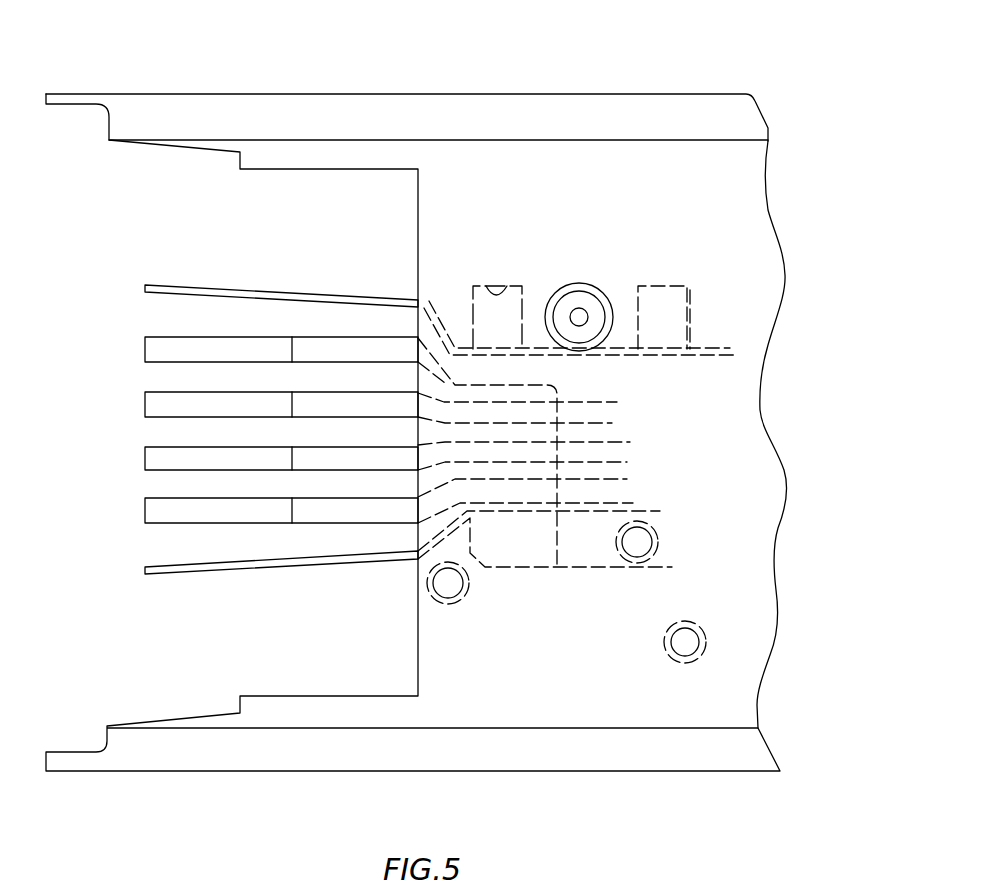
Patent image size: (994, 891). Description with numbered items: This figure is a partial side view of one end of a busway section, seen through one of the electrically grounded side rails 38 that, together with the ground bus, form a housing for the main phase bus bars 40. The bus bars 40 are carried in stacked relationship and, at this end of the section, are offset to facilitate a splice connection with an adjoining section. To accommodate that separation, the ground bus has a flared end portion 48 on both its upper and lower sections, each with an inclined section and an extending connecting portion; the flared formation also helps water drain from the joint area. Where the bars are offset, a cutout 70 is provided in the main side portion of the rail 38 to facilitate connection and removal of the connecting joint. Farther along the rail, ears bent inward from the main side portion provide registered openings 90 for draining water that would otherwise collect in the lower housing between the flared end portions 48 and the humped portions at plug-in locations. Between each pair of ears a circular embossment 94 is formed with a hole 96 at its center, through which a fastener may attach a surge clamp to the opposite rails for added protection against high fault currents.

The ground side rails 38 is at (578, 703).
The main phase bus bars 40 is at (147, 350).
The flared end portion 48 is at (220, 285).
The cutout 70 is at (418, 243).
The openings 90 is at (516, 286).
The circular embossment 94 is at (580, 283).
The hole 96 is at (588, 308).